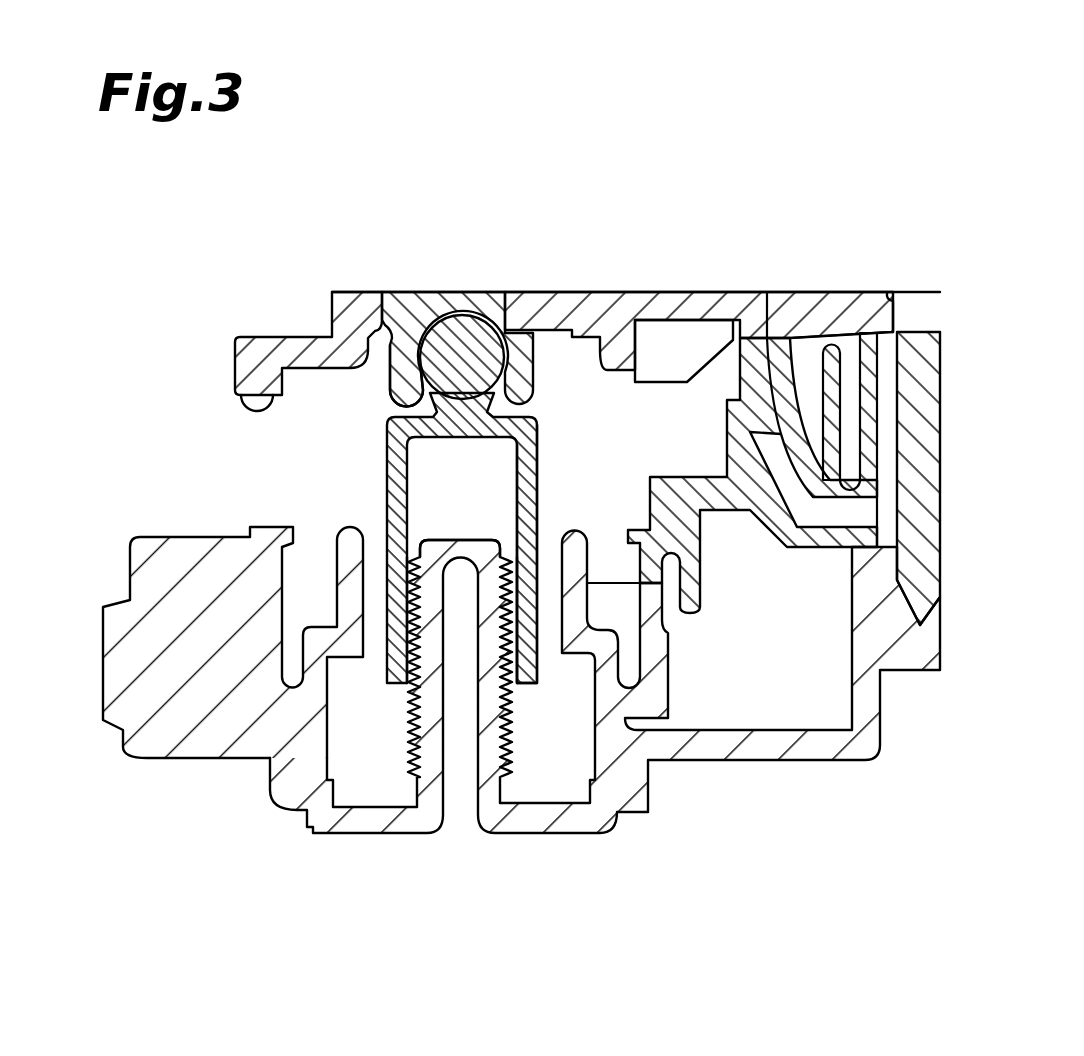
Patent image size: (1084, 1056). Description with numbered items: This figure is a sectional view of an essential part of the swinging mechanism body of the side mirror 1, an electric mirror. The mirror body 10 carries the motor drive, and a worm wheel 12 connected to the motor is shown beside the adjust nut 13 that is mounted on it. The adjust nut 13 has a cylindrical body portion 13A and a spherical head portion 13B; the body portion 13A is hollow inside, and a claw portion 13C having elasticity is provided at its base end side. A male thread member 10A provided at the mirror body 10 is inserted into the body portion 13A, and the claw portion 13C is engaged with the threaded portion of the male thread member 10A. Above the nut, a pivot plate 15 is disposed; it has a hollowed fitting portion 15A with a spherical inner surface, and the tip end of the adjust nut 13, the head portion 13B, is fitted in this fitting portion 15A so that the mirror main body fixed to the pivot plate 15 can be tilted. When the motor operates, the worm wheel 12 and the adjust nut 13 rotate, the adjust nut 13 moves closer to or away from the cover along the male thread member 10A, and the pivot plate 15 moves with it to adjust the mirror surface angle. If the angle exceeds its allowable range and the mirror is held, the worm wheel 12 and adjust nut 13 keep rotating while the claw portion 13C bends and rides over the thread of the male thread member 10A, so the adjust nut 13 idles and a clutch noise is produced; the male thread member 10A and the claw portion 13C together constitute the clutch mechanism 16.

The side mirror 1 is at (719, 192).
The mirror body 10 is at (560, 827).
The male thread member 10A is at (421, 758).
The worm wheel 12 is at (236, 702).
The adjust nut 13 is at (380, 468).
The body portion 13A is at (540, 483).
The head portion 13B is at (460, 333).
The claw portion 13C is at (405, 688).
The pivot plate 15 is at (586, 303).
The fitting portion 15A is at (407, 382).
The clutch mechanism 16 is at (402, 937).